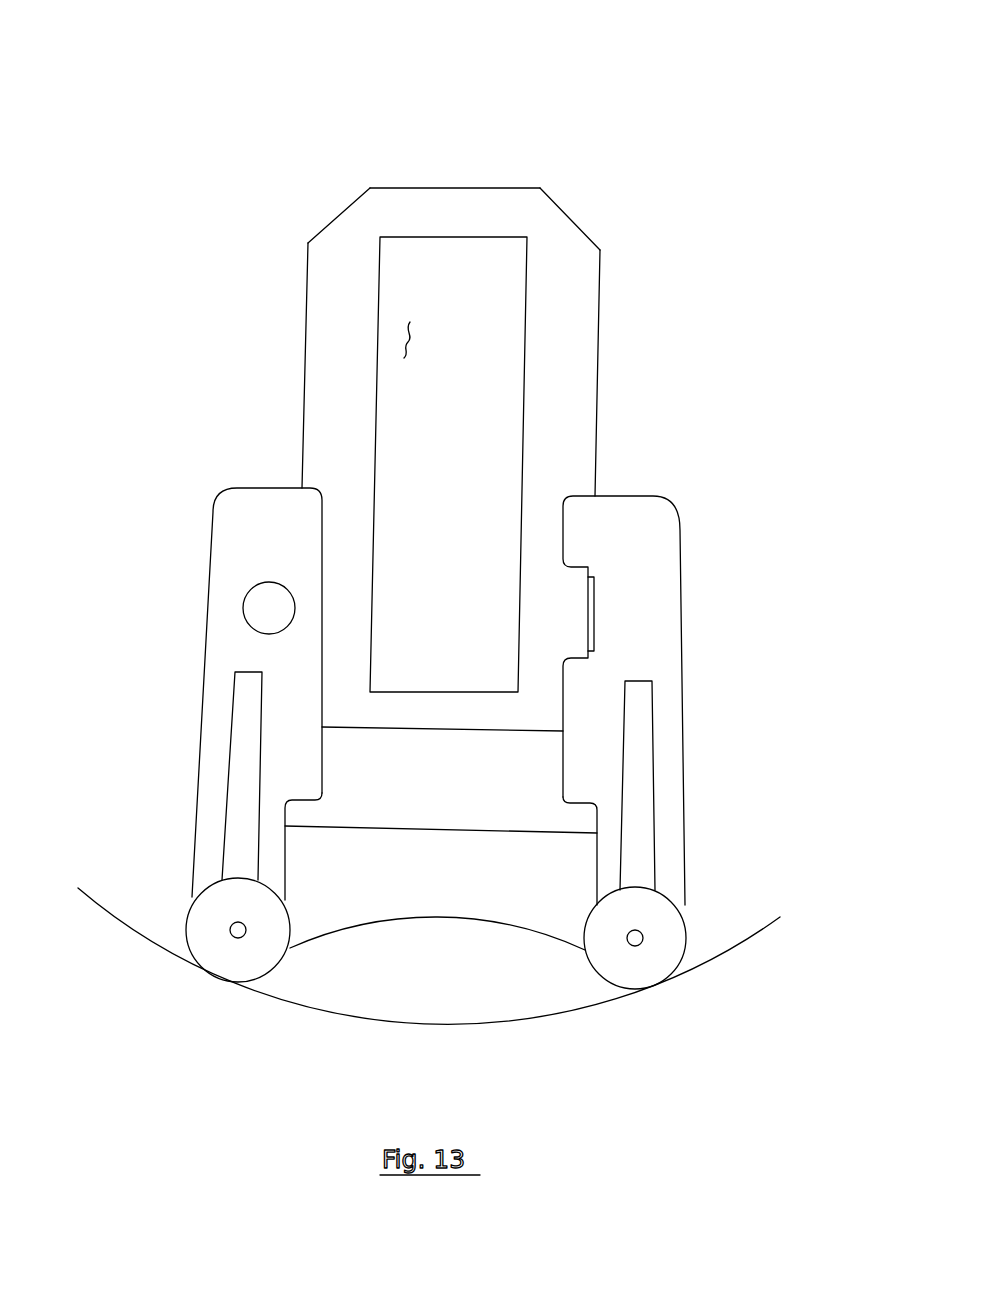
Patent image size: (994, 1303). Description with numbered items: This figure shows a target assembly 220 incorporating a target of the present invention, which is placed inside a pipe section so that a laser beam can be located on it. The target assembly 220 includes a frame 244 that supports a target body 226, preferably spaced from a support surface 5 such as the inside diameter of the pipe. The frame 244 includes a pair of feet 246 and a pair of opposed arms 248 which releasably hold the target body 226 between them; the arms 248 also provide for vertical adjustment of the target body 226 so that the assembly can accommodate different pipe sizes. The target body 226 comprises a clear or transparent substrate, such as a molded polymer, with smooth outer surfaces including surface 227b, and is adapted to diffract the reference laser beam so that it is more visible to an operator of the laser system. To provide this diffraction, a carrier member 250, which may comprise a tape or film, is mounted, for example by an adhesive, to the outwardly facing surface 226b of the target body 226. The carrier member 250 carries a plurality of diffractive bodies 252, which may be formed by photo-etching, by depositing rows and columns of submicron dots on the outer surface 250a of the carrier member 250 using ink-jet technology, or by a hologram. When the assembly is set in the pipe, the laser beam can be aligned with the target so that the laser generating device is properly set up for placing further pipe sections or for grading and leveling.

The rail surface 5 is at (755, 932).
The target assembly 220 is at (455, 443).
The target body 226 is at (473, 187).
The outwardly facing surface 226b is at (318, 260).
The smooth outer surface 227b is at (350, 235).
The frame 244 is at (205, 608).
The feet 246 is at (205, 913).
The opposed arms 248 is at (252, 525).
The carrier member 250 is at (528, 323).
The outer surface of carrier 250a is at (400, 338).
The diffractive bodies 252 is at (502, 420).